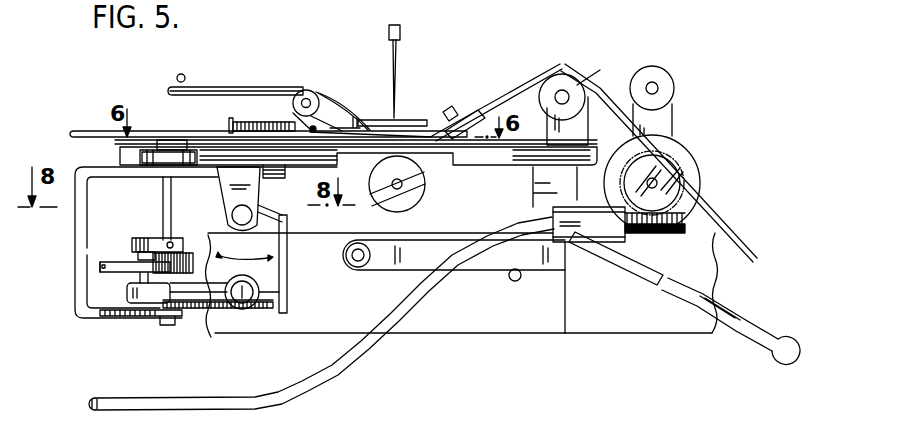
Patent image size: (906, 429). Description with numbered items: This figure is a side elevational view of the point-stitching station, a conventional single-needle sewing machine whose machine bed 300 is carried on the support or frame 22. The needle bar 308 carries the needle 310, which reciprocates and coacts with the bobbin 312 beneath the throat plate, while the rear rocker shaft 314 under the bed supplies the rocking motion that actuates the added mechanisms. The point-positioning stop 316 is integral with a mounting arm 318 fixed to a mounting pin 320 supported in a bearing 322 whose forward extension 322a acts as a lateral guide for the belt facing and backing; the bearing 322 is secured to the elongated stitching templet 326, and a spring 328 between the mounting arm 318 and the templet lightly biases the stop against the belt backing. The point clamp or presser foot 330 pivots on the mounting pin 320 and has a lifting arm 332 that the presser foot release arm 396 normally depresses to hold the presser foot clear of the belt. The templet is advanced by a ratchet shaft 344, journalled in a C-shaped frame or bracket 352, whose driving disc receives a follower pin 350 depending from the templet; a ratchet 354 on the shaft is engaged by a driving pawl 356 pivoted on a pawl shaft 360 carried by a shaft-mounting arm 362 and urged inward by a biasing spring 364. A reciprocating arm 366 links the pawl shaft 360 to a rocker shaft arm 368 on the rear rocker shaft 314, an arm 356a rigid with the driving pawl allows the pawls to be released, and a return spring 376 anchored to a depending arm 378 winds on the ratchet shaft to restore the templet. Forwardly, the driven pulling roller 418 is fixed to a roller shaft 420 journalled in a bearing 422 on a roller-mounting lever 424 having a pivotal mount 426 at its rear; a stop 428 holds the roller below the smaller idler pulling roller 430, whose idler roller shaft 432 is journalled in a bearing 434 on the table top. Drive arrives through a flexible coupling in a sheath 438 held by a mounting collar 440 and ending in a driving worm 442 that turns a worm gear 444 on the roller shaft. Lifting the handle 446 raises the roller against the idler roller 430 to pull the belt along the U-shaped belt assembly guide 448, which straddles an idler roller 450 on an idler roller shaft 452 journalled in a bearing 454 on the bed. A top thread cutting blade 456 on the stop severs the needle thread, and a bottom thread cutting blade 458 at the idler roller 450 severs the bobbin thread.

The support or frame 22 is at (672, 335).
The machine bed 300 is at (512, 160).
The needle bar 308 is at (394, 24).
The needle 310 is at (398, 60).
The bobbin 312 is at (415, 197).
The rear rocker shaft 314 is at (255, 220).
The point-positioning stop 316 is at (457, 108).
The mounting arm 318 is at (358, 122).
The mounting pin 320 is at (305, 90).
The bearing 322 is at (308, 88).
The forward extension 322a is at (402, 117).
The stitching templet 326 is at (218, 147).
The spring 328 is at (257, 120).
The point clamp or presser foot 330 is at (346, 100).
The lifting arm 332 is at (167, 88).
The ratchet shaft 344 is at (168, 193).
The follower pin 350 is at (182, 152).
The housing 352 is at (78, 254).
The ratchet 354 is at (194, 252).
The driving pawl 356 is at (142, 266).
The arm 356a is at (100, 266).
The pawl shaft 360 is at (147, 278).
The shaft-mounting arm 362 is at (183, 240).
The biasing spring 364 is at (132, 250).
The reciprocating arm 366 is at (193, 310).
The rocker shaft arm 368 is at (267, 273).
The return spring 376 is at (267, 310).
The depending arm 378 is at (287, 297).
The presser foot release arm 396 is at (180, 74).
The driven pulling roller 418 is at (678, 153).
The roller shaft 420 is at (657, 181).
The bearing 422 is at (618, 205).
The roller-mounting lever 424 is at (482, 265).
The pivotal mount 426 is at (354, 268).
The stop 428 is at (513, 282).
The idler pulling roller 430 is at (668, 80).
The idler roller shaft 432 is at (653, 82).
The bracket 434 is at (672, 113).
The sheath 438 is at (300, 398).
The mounting collar 440 is at (595, 227).
The driving worm 442 is at (662, 237).
The worm gear 444 is at (678, 187).
The handle 446 is at (140, 157).
The U-shaped belt assembly guide 448 is at (558, 62).
The idler roller 450 is at (548, 85).
The idler roller shaft 452 is at (556, 95).
The bearing 454 is at (552, 128).
The top thread cutting blade 456 is at (461, 122).
The bottom thread cutting blade 458 is at (585, 72).